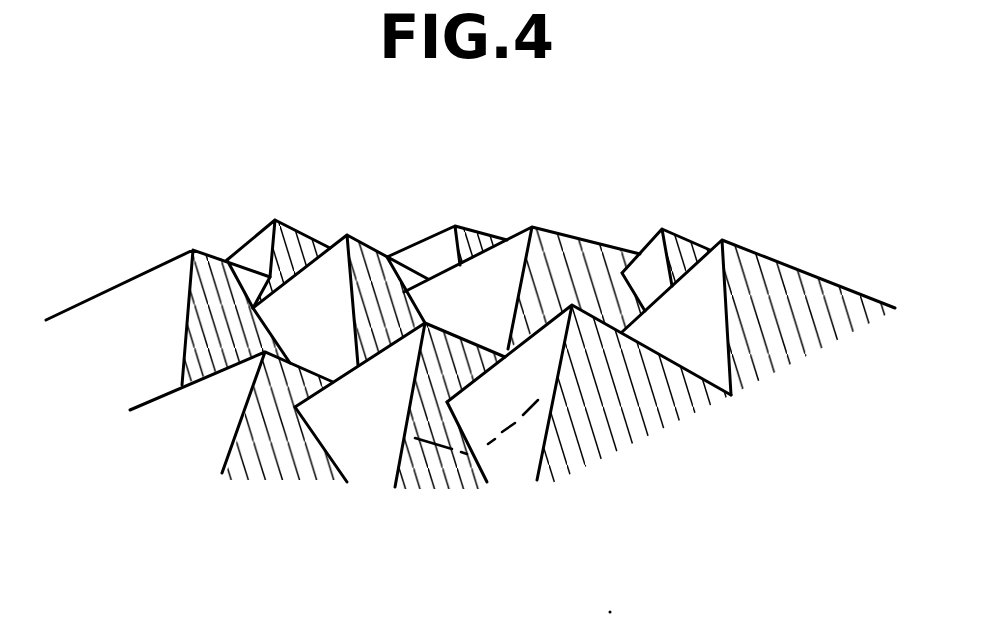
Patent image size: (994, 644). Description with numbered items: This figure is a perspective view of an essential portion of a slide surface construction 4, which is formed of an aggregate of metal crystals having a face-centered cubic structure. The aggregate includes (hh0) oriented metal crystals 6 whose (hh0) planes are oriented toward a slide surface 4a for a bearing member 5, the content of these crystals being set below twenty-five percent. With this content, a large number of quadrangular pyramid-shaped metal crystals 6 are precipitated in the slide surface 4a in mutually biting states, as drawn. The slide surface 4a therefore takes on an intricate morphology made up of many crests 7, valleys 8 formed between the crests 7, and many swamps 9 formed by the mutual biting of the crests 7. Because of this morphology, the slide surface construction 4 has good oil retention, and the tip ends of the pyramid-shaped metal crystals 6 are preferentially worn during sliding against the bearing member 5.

The slide surface construction 4 is at (610, 223).
The slide surface 4a is at (206, 270).
The bearing member 5 is at (430, 443).
The (hh0) oriented metal crystals 6 is at (800, 270).
The crests 7 is at (364, 253).
The valleys 8 is at (435, 303).
The swamps 9 is at (480, 458).